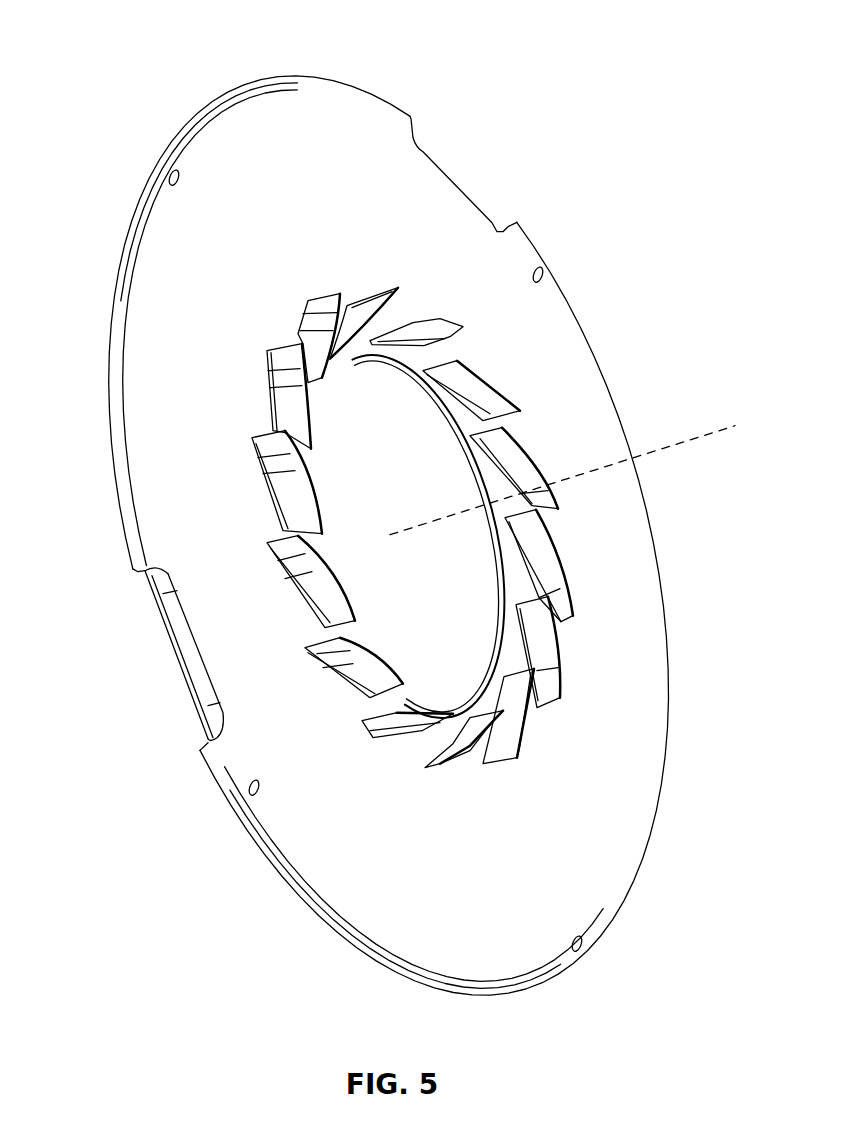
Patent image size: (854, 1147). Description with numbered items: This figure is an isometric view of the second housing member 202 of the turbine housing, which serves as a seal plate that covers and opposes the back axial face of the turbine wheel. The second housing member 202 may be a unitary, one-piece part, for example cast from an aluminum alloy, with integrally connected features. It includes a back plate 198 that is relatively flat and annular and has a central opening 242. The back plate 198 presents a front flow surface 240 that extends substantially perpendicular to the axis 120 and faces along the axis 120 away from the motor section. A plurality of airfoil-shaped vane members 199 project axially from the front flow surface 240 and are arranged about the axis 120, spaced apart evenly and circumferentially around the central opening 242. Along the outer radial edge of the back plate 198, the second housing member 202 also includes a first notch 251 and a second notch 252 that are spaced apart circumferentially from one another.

The axis 120 is at (691, 438).
The back plate 198 is at (273, 117).
The vane members 199 is at (496, 371).
The second housing member 202 is at (587, 230).
The front flow surface 240 is at (252, 237).
The central opening 242 is at (382, 358).
The first notch 251 is at (195, 657).
The second notch 252 is at (457, 178).